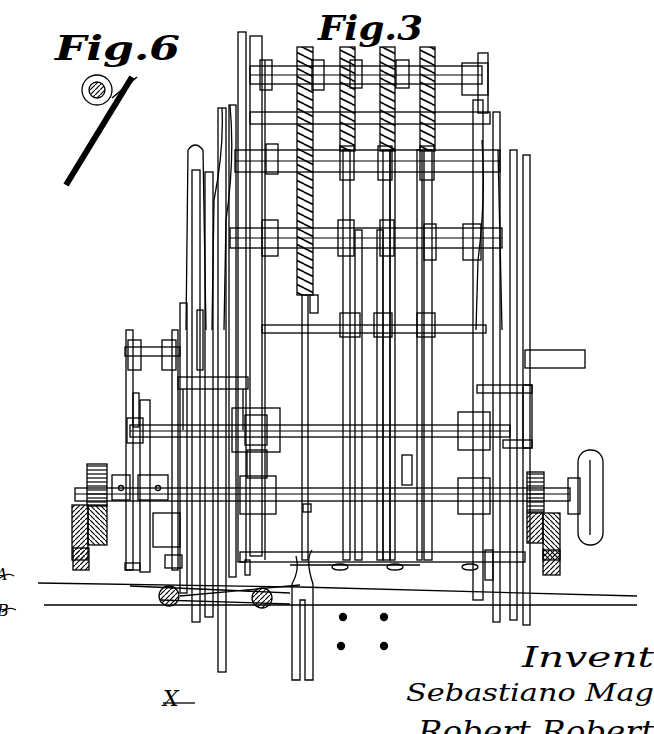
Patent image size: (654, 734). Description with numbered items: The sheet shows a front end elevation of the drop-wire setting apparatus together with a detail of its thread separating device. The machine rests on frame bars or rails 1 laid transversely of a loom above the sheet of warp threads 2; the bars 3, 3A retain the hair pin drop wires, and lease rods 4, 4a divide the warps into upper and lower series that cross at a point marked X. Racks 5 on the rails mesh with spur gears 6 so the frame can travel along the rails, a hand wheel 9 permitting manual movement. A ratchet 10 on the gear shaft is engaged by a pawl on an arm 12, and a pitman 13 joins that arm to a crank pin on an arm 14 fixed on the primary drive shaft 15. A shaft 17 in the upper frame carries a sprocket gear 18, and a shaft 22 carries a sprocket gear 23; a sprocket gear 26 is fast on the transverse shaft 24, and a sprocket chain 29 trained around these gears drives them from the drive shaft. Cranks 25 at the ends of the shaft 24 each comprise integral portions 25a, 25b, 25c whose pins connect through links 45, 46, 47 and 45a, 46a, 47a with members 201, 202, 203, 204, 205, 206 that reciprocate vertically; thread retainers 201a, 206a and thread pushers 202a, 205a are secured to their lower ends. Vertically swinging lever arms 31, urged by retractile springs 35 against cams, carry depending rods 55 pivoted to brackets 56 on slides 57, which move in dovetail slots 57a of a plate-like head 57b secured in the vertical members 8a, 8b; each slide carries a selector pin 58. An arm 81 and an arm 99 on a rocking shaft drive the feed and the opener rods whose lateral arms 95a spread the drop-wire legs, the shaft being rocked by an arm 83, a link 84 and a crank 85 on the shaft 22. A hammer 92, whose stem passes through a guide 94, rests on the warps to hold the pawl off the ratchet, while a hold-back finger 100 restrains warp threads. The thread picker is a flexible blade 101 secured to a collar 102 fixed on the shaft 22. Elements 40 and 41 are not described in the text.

In FIG. 3, the frame bars or rails 1 is at (72, 525).
In FIG. 3, the sheet of warp threads 2 is at (98, 616).
In FIG. 3, the bars 3 is at (381, 621).
In FIG. 3, the bars 3A is at (258, 55).
In FIG. 3, the lease rods 4 is at (143, 592).
In FIG. 3, the lease rod 4a is at (262, 615).
In FIG. 3, the racks 5 is at (90, 550).
In FIG. 3, the spur gears 6 is at (98, 465).
In FIG. 3, the vertically extending member 8a is at (475, 299).
In FIG. 3, the vertically extending member 8b is at (265, 368).
In FIG. 3, the hand wheel 9 is at (598, 457).
In FIG. 3, the ratchet 10 is at (127, 460).
In FIG. 3, the arm 12 is at (142, 460).
In FIG. 3, the pitman 13 is at (125, 377).
In FIG. 3, the arm 14 is at (133, 340).
In FIG. 3, the primary drive shaft 15 is at (145, 340).
In FIG. 3, the shaft 17 is at (458, 70).
In FIG. 3, the sprocket gear 18 is at (243, 60).
In FIG. 6, the shaft 22 is at (84, 98).
In FIG. 3, the shaft 22 is at (195, 620).
In FIG. 3, the sprocket gear 23 is at (238, 608).
In FIG. 3, the shaft 24 is at (482, 140).
In FIG. 3, the cranks 25 is at (210, 124).
In FIG. 3, the crank portion 25a is at (232, 108).
In FIG. 3, the crank portion 25b is at (221, 122).
In FIG. 3, the crank portion 25c is at (220, 165).
In FIG. 3, the sprocket gear 26 is at (244, 148).
In FIG. 3, the sprocket belt or chain 29 is at (240, 193).
In FIG. 3, the lever arms 31 is at (318, 212).
In FIG. 3, the retractile springs 35 is at (426, 52).
In FIG. 3, the bracket 40 is at (183, 303).
In FIG. 3, the plate 41 is at (248, 330).
In FIG. 3, the link 45 is at (217, 223).
In FIG. 3, the link 45a is at (492, 233).
In FIG. 3, the link 46 is at (213, 260).
In FIG. 3, the link 46a is at (507, 250).
In FIG. 3, the link 47 is at (193, 198).
In FIG. 3, the link 47a is at (521, 273).
In FIG. 3, the rods 55 is at (354, 294).
In FIG. 3, the brackets 56 is at (323, 296).
In FIG. 3, the slides 57 is at (368, 385).
In FIG. 3, the dovetail slots 57a is at (388, 466).
In FIG. 3, the plate-like head 57b is at (452, 353).
In FIG. 3, the selector pin 58 is at (308, 512).
In FIG. 3, the arm 81 is at (488, 467).
In FIG. 3, the arm 83 is at (153, 428).
In FIG. 3, the link 84 is at (152, 533).
In FIG. 3, the crank 85 is at (222, 510).
In FIG. 3, the hammer 92 is at (138, 576).
In FIG. 3, the guide 94 is at (127, 568).
In FIG. 3, the lateral arms 95a is at (337, 565).
In FIG. 3, the arm 99 is at (236, 461).
In FIG. 3, the finger 100 is at (163, 606).
In FIG. 6, the flexible blade 101 is at (87, 141).
In FIG. 3, the flexible blade 101 is at (232, 587).
In FIG. 6, the collar or bracket 102 is at (142, 81).
In FIG. 3, the member 201 is at (193, 325).
In FIG. 3, the thread retainer 201a is at (155, 669).
In FIG. 3, the member 202 is at (180, 407).
In FIG. 3, the thread pusher 202a is at (222, 672).
In FIG. 3, the member 203 is at (240, 281).
In FIG. 3, the member 204 is at (493, 313).
In FIG. 3, the member 205 is at (505, 410).
In FIG. 3, the thread pusher 205a is at (503, 658).
In FIG. 3, the member 206 is at (522, 422).
In FIG. 3, the thread retainer 206a is at (526, 622).